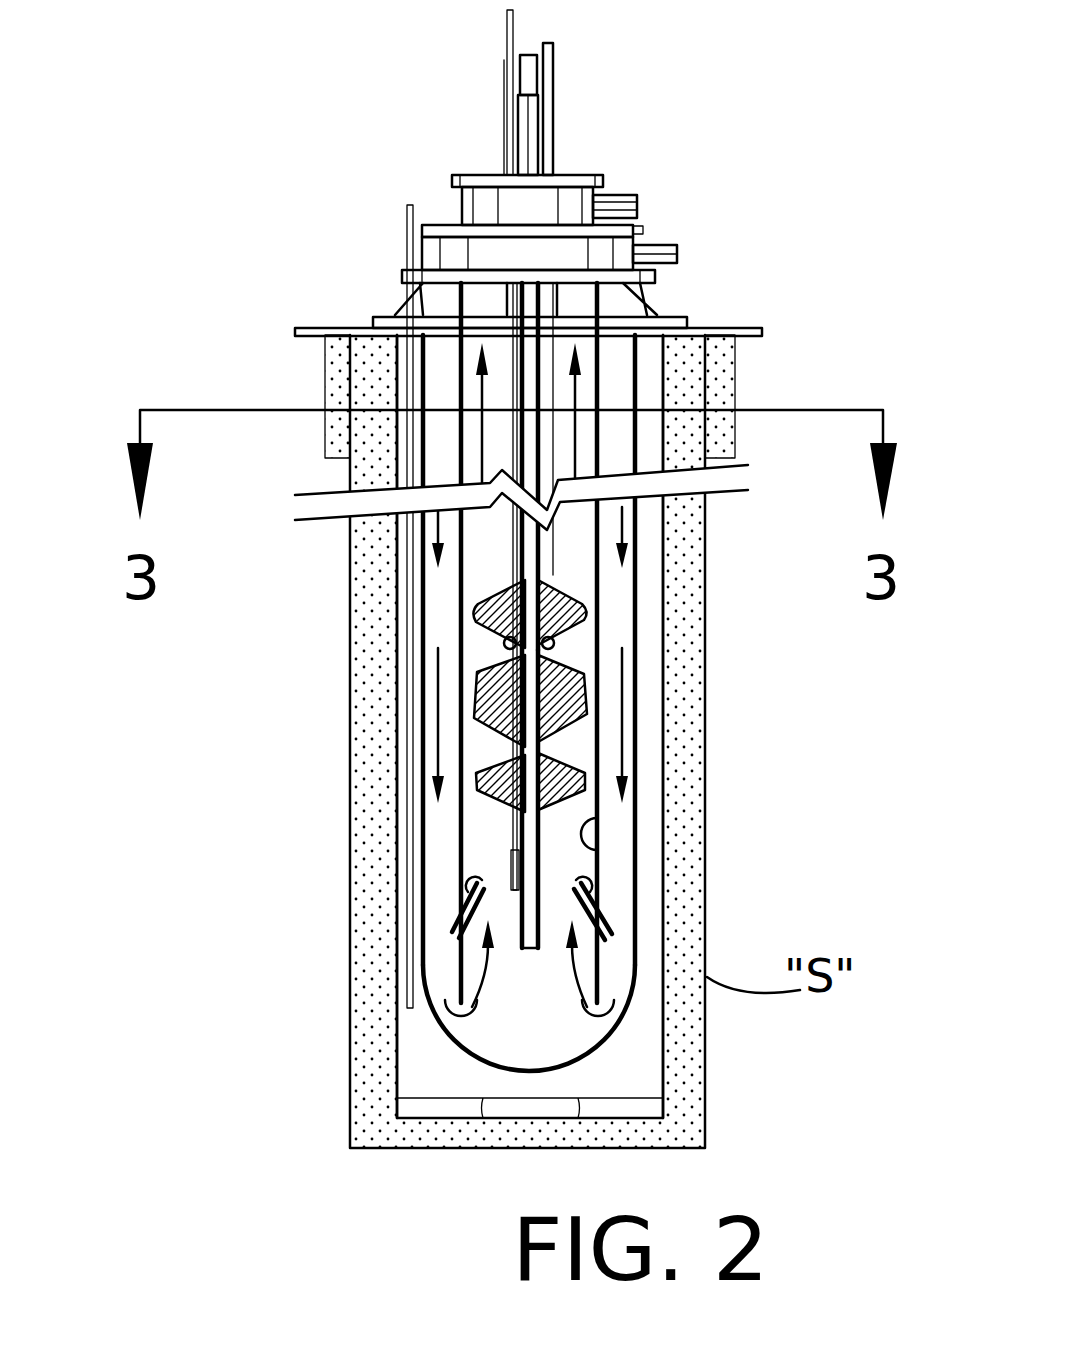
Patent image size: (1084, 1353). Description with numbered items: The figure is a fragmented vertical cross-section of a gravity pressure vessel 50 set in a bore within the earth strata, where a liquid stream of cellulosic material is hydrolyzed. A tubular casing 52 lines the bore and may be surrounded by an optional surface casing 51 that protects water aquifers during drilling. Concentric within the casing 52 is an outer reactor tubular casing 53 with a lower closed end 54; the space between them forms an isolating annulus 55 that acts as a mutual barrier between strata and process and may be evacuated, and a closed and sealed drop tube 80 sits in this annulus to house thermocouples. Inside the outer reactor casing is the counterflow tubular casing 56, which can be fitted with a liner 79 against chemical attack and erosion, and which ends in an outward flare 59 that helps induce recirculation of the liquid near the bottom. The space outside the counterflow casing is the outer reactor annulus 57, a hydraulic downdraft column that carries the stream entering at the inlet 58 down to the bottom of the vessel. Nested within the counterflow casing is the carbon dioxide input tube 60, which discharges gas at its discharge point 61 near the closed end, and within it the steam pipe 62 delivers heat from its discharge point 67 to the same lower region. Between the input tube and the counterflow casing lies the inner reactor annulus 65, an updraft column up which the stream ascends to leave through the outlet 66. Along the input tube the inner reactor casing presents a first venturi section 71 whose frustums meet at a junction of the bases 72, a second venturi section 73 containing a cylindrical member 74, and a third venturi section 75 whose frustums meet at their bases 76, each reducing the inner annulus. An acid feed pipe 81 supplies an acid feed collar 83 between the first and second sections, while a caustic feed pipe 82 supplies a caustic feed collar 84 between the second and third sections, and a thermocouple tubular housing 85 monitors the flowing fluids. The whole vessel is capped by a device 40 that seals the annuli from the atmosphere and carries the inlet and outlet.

The capping device 40 is at (437, 198).
The gravity pressure vessel 50 is at (320, 1152).
The surface casing 51 is at (352, 377).
The tubular casing 52 is at (393, 575).
The outer reactor tubular casing 53 is at (420, 670).
The lower closed end 54 is at (458, 1038).
The isolating annulus 55 is at (648, 555).
The counterflow tubular casing 56 is at (545, 648).
The outer reactor annulus 57 is at (625, 523).
The inlet 58 is at (677, 253).
The outward flare 59 is at (605, 910).
The carbon dioxide input tube 60 is at (515, 150).
The carbon dioxide discharge point 61 is at (512, 878).
The steam pipe 62 is at (567, 45).
The inner reactor annulus 65 is at (577, 400).
The outlet 66 is at (640, 200).
The steam discharge point 67 is at (575, 1065).
The first venturi section 71 is at (462, 860).
The junction of the two bases 72 is at (545, 746).
The second venturi section 73 is at (545, 640).
The cylindrical member 74 is at (470, 700).
The third venturi section 75 is at (525, 605).
The bases of the third venturi section 76 is at (553, 638).
The liner 79 is at (598, 845).
The drop tube 80 is at (405, 252).
The acid feed pipe 81 is at (505, 118).
The caustic feed pipe 82 is at (557, 127).
The acid feed collar 83 is at (542, 745).
The caustic feed collar 84 is at (560, 645).
The thermocouple tubular housing 85 is at (505, 30).